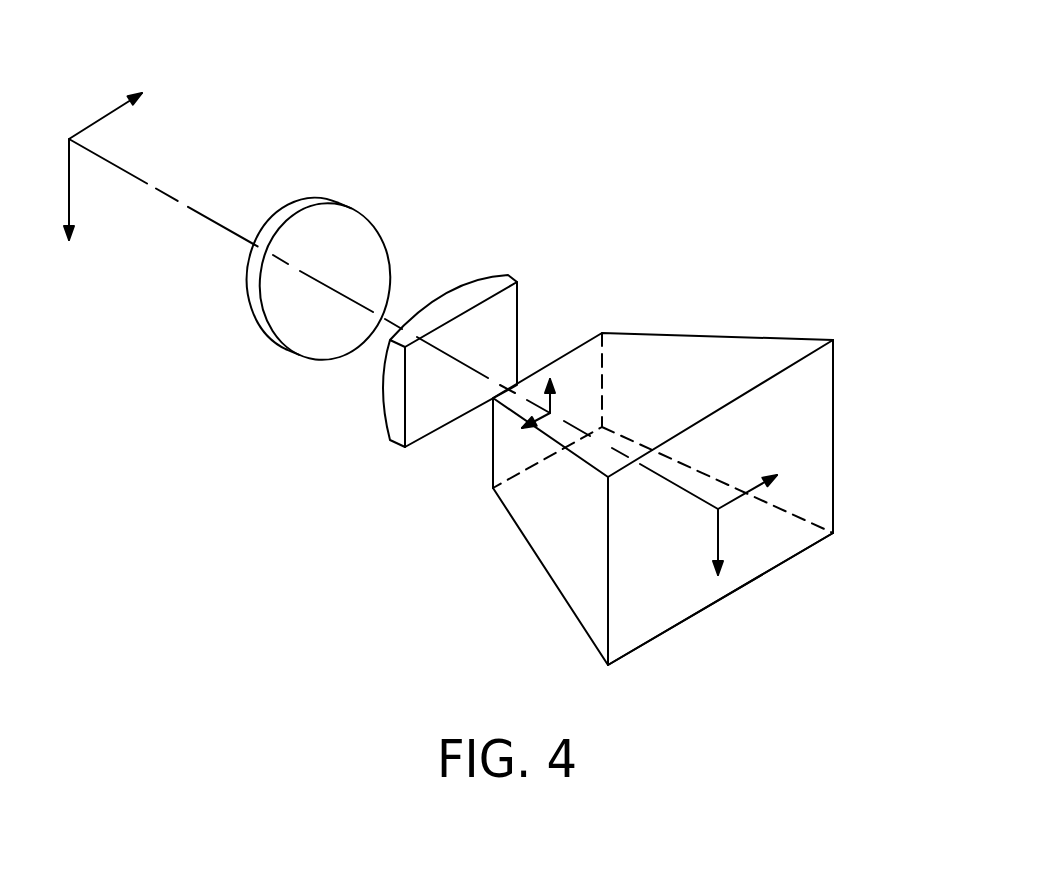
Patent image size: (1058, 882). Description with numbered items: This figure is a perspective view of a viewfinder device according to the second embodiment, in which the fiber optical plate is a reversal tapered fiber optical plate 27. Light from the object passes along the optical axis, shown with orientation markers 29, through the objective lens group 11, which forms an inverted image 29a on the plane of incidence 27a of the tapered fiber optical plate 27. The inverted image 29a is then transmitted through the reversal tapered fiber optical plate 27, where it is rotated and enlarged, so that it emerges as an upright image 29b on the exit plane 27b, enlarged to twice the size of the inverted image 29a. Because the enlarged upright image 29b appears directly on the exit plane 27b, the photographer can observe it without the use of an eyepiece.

The objective lens group 11 is at (527, 268).
The reversal tapered fiber optical plate 27 is at (690, 363).
The plane of incidence 27a is at (579, 379).
The exit plane 27b is at (813, 433).
The polarization axes 29 is at (105, 113).
The inverted image 29a is at (538, 430).
The upright image 29b is at (718, 530).